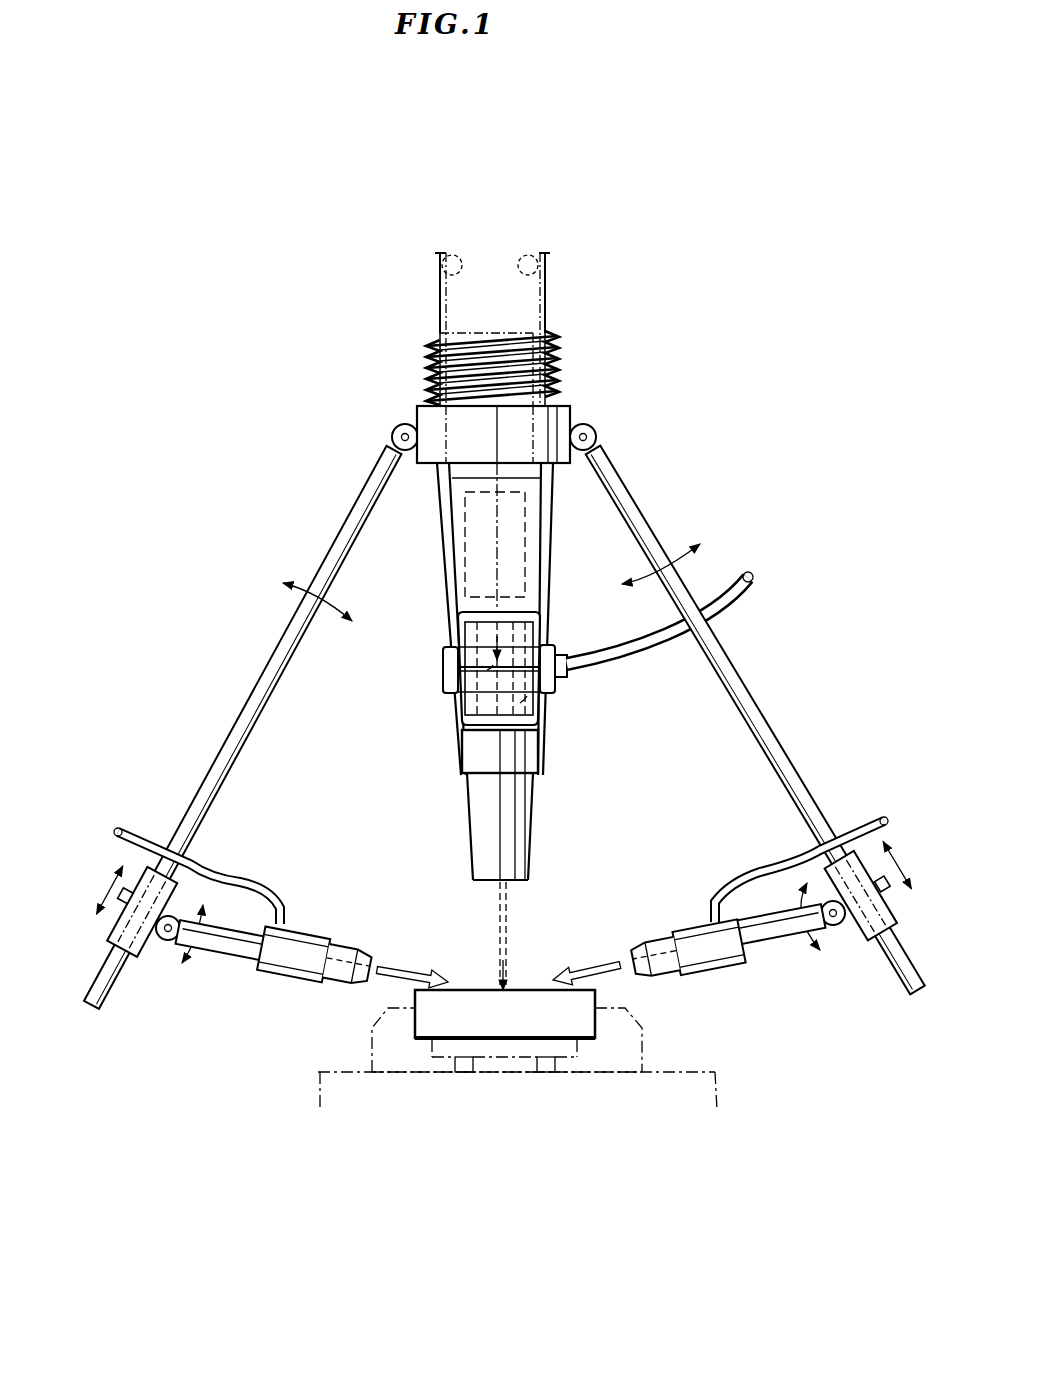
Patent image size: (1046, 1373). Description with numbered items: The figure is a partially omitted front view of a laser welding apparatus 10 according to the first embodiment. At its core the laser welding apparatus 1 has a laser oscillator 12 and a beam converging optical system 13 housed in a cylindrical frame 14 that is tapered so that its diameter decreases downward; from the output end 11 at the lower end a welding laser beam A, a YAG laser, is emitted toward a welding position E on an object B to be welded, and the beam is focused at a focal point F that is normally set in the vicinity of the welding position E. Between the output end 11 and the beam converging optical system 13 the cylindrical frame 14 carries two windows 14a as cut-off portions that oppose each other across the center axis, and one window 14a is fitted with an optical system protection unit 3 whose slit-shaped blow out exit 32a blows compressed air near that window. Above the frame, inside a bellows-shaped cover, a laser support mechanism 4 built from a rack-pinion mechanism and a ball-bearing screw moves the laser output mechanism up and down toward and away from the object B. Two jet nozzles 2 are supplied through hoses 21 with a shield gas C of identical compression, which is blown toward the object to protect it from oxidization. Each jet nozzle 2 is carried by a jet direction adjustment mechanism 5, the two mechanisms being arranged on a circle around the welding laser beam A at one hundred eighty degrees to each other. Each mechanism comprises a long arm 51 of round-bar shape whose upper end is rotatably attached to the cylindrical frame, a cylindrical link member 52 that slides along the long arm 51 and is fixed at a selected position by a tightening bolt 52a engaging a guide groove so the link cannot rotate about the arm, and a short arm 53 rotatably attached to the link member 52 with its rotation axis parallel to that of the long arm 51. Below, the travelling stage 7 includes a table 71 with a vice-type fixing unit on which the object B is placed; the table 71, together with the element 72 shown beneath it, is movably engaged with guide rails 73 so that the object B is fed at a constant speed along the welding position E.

The laser welding apparatus 10 is at (648, 282).
The laser welding apparatus 1 is at (272, 423).
The laser oscillator 12 is at (393, 439).
The beam converging optical system 13 is at (465, 527).
The cylindrical frame 14 is at (446, 573).
The window 14a is at (520, 703).
The optical system protection unit 3 is at (552, 643).
The blow out exit 32a is at (487, 670).
The output end 11 is at (525, 881).
The laser support mechanism 4 is at (437, 302).
The jet nozzle 2 is at (288, 975).
The hose 21 is at (222, 876).
The jet direction adjustment mechanism 5 is at (236, 1105).
The long arm 51 is at (137, 956).
The link member 52 is at (172, 945).
The tightening bolt 52a is at (129, 895).
The short arm 53 is at (232, 952).
The travelling stage 7 is at (767, 1190).
The table 71 is at (600, 1048).
The stage plate 72 is at (643, 1043).
The guide rail 73 is at (563, 1065).
The welding laser beam A is at (497, 920).
The object to be welded B is at (458, 1022).
The shield gas C is at (498, 947).
The welding position E is at (505, 1000).
The focal point F is at (505, 1000).